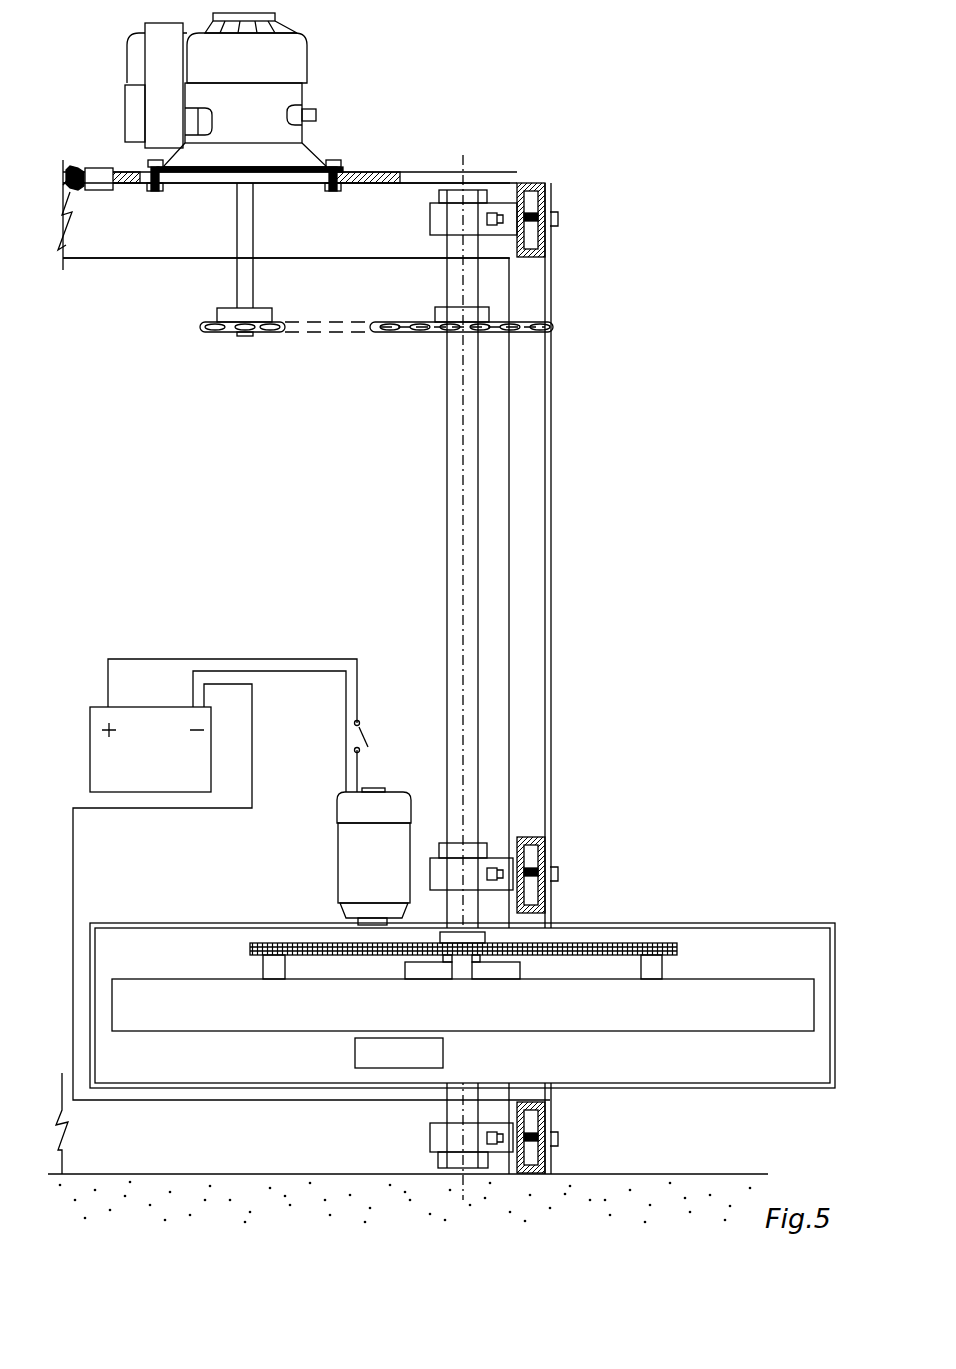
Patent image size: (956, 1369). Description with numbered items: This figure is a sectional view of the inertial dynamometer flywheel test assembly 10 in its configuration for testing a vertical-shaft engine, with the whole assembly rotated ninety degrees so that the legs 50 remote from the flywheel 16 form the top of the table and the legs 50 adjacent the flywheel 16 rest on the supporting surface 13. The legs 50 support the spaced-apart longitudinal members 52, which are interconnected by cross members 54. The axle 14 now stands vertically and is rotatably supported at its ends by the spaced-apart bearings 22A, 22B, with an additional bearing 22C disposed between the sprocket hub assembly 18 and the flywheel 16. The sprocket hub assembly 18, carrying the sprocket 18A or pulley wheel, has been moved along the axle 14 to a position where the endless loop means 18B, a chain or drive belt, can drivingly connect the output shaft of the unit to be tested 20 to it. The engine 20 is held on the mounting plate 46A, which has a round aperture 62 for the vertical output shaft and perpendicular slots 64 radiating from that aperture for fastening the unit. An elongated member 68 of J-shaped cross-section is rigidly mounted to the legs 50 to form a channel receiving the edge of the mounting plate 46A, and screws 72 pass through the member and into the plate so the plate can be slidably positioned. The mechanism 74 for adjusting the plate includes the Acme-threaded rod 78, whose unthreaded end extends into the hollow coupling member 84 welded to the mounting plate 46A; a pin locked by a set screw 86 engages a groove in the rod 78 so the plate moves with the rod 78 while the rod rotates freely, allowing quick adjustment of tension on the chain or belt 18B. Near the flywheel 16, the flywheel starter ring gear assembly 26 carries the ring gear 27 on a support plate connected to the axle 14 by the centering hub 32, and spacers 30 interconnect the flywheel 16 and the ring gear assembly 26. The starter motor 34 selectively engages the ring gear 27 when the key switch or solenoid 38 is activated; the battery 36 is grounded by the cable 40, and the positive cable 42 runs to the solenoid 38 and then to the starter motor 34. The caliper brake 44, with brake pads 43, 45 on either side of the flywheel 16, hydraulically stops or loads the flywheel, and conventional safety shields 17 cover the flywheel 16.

The inertial dynamometer flywheel test assembly 10 is at (586, 282).
The support surface 13 is at (680, 1174).
The axle 14 is at (450, 468).
The flywheel 16 is at (185, 1031).
The safety shields 17 is at (176, 924).
The sprocket hub assembly 18 is at (422, 320).
The sprocket 18A is at (433, 330).
The endless loop means 18B is at (320, 338).
The unit to be tested 20 is at (305, 57).
The bearing 22A is at (430, 215).
The bearing 22B is at (432, 1138).
The additional bearing 22C is at (473, 862).
The flywheel starter ring gear assembly 26 is at (300, 943).
The ring gear 27 is at (318, 945).
The spacers 30 is at (263, 962).
The centering hub 32 is at (445, 930).
The starter motor 34 is at (345, 845).
The battery 36 is at (96, 764).
The key switch or solenoid 38 is at (366, 736).
The cable 40 is at (253, 785).
The positive cable 42 is at (175, 659).
The brake pad 43 is at (363, 1068).
The caliper brake 44 is at (355, 1040).
The brake pad 45 is at (366, 978).
The mounting plate 46A is at (388, 183).
The legs 50 is at (322, 250).
The longitudinal members 52 is at (552, 573).
The cross members 54 is at (546, 202).
The aperture 62 is at (233, 186).
The slots 64 is at (290, 185).
The elongated member 68 is at (372, 172).
The screws 72 is at (118, 160).
The mechanism 74 is at (75, 190).
The rod 78 is at (72, 198).
The hollow coupling member 84 is at (106, 190).
The set screw 86 is at (85, 170).